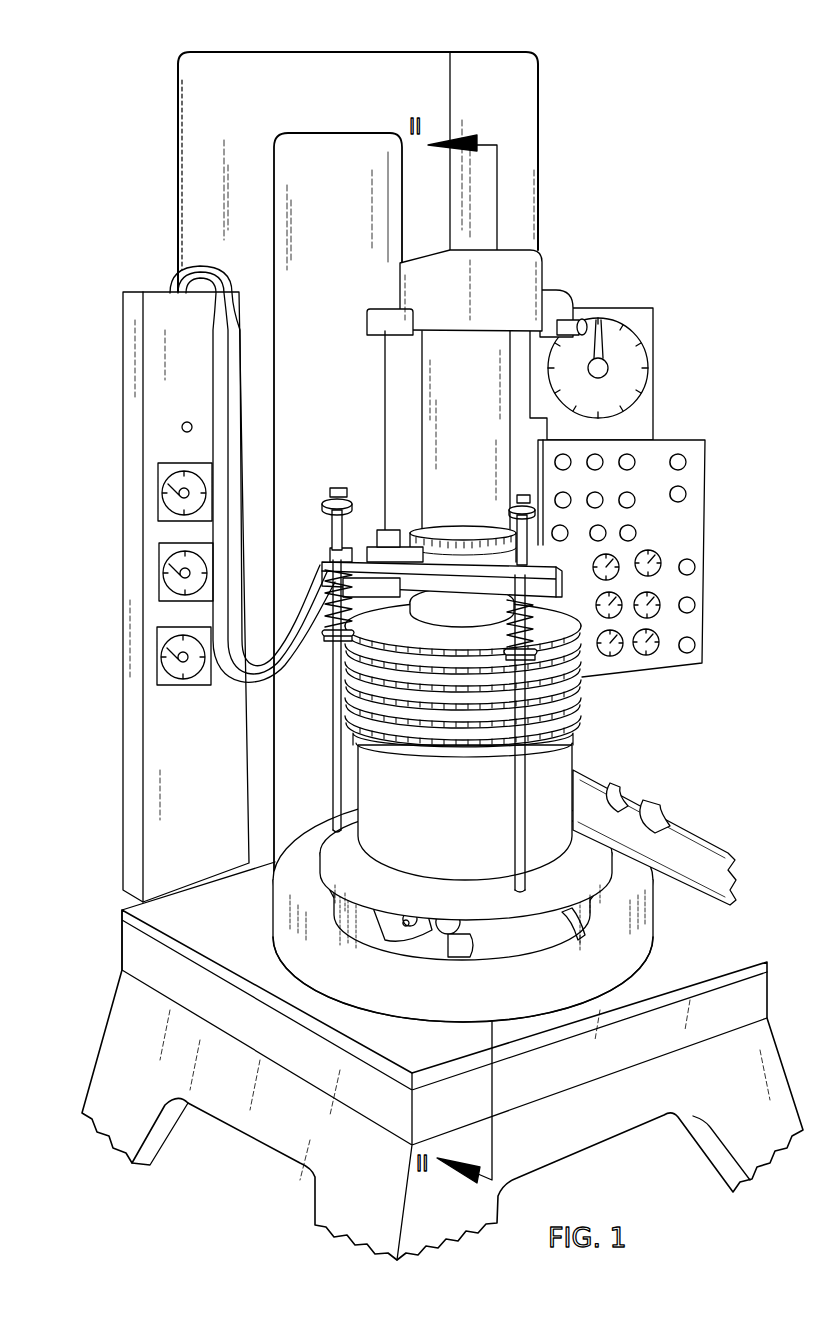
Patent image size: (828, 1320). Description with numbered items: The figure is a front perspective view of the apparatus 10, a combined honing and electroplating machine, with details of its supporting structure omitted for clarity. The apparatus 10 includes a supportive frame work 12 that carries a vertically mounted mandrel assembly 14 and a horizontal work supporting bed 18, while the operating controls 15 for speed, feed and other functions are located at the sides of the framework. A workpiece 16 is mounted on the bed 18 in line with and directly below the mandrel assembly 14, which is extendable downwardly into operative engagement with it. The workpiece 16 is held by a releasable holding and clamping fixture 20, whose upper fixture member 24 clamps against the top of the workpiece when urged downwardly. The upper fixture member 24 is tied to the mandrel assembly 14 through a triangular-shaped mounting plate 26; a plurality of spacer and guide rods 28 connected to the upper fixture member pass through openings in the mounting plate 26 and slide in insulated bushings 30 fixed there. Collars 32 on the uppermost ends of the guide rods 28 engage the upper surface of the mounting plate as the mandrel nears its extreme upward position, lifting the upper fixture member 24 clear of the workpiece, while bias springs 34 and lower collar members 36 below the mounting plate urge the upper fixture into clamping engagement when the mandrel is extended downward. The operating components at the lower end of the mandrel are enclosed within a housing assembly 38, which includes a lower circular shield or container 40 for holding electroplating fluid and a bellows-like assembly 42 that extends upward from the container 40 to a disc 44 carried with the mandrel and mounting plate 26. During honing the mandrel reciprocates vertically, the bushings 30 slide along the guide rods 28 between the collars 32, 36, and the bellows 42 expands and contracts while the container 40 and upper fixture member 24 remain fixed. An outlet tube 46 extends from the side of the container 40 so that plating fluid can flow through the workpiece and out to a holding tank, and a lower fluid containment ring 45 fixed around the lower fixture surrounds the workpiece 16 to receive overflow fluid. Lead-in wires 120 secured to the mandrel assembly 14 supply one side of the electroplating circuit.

The apparatus 10 is at (633, 158).
The supportive frame work 12 is at (221, 831).
The mandrel assembly 14 is at (412, 428).
The operating controls 15 is at (683, 537).
The workpiece 16 is at (517, 950).
The work supporting bed 18 is at (125, 955).
The releasable holding and clamping fixture 20 is at (604, 891).
The upper fixture member 24 is at (364, 864).
The mounting plate 26 is at (479, 580).
The spacer and guide rods 28 is at (332, 806).
The insulated bushings 30 is at (322, 543).
The collars 32 is at (324, 498).
The bias springs 34 is at (326, 640).
The lower collar members 36 is at (338, 660).
The housing assembly 38 is at (611, 770).
The lower circular shield or container 40 is at (422, 820).
The bellows-like assembly 42 is at (381, 735).
The disc 44 is at (396, 631).
The lower fluid containment ring 45 is at (588, 993).
The outlet tube 46 is at (657, 808).
The lead-in wires 120 is at (232, 680).